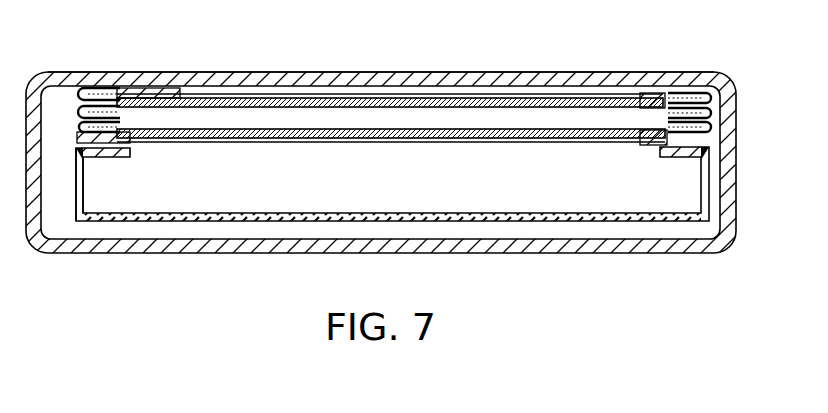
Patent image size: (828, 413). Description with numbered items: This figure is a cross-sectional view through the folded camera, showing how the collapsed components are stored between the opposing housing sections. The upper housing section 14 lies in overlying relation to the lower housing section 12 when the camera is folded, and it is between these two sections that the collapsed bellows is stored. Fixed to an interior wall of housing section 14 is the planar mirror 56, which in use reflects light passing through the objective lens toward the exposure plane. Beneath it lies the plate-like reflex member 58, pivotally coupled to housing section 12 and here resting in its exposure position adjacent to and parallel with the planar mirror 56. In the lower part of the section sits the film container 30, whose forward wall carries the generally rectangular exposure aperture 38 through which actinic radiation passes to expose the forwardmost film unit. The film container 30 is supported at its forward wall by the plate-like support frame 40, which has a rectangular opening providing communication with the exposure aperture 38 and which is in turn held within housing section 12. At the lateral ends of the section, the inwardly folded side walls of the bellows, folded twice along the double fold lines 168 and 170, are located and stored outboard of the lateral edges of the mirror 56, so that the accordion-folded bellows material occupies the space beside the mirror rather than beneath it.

The housing section 12 is at (247, 253).
The housing section 14 is at (393, 75).
The film container 30 is at (316, 211).
The exposure aperture 38 is at (121, 158).
The support frame 40 is at (72, 142).
The planar mirror 56 is at (330, 100).
The reflex member 58 is at (428, 140).
The double fold line 168 is at (140, 93).
The double fold line 170 is at (128, 140).